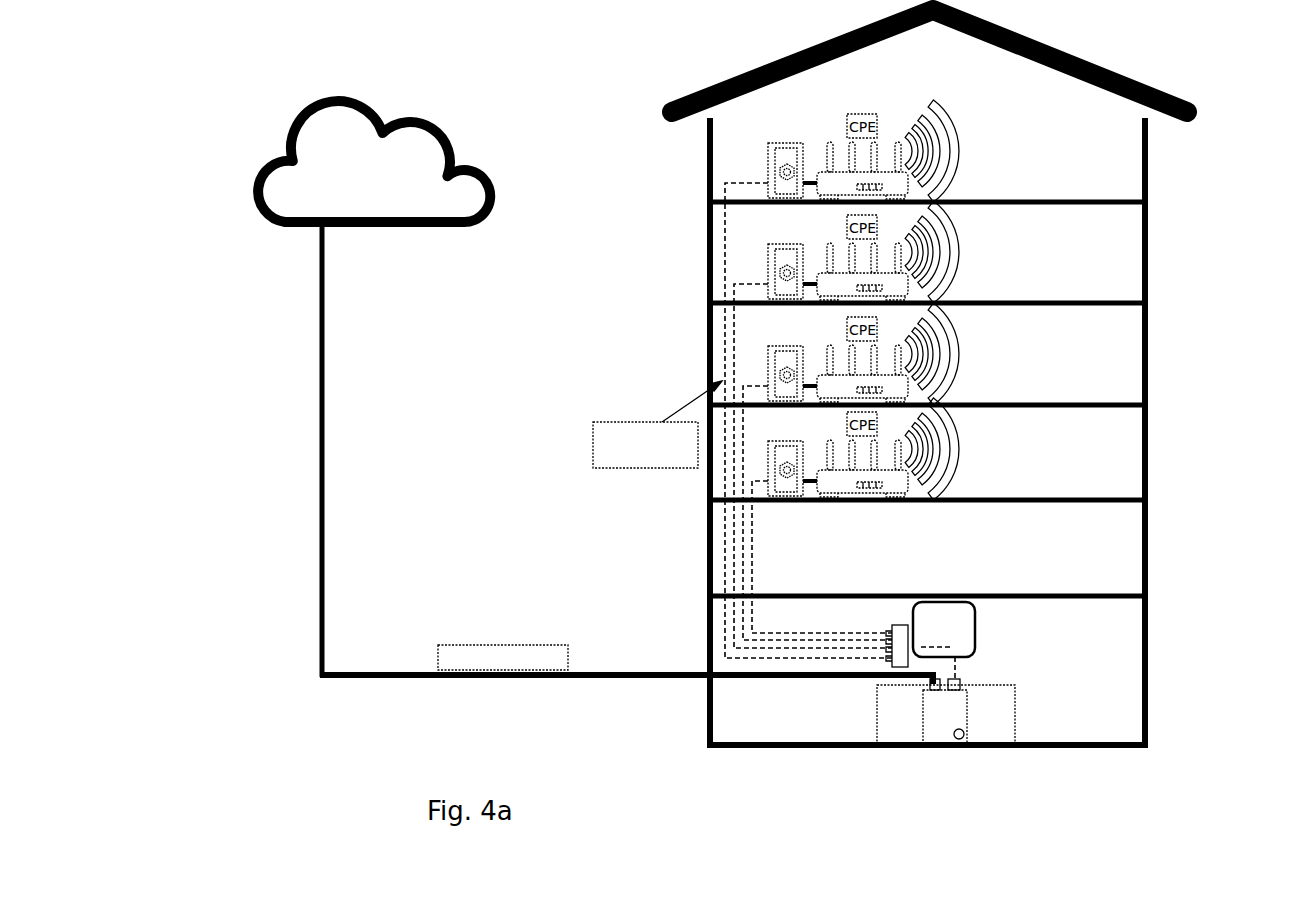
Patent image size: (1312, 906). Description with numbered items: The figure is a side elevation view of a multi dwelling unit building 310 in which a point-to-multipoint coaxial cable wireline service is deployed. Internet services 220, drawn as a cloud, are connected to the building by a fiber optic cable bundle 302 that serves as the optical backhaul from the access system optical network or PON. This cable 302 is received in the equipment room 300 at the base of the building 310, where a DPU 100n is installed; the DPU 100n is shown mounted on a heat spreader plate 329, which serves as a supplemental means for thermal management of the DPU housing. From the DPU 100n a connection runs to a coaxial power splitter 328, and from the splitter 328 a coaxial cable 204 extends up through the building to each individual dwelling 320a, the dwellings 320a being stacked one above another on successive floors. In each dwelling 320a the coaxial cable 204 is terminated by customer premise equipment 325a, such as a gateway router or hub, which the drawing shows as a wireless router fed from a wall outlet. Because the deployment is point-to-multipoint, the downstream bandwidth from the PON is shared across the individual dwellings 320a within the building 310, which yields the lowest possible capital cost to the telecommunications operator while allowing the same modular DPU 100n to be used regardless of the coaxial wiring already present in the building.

The Internet services 220 is at (272, 192).
The fiber optic cable bundle 302 is at (403, 680).
The building 310 is at (1168, 178).
The individual dwelling unit 320a is at (1118, 257).
The customer premise equipment (CPE) 325a is at (916, 300).
The coaxial cable 204 is at (733, 552).
The coaxial power splitter 328 is at (975, 605).
The equipment room 300 is at (1123, 658).
The heat spreader plate 329 is at (990, 722).
The DPU 100n is at (930, 737).